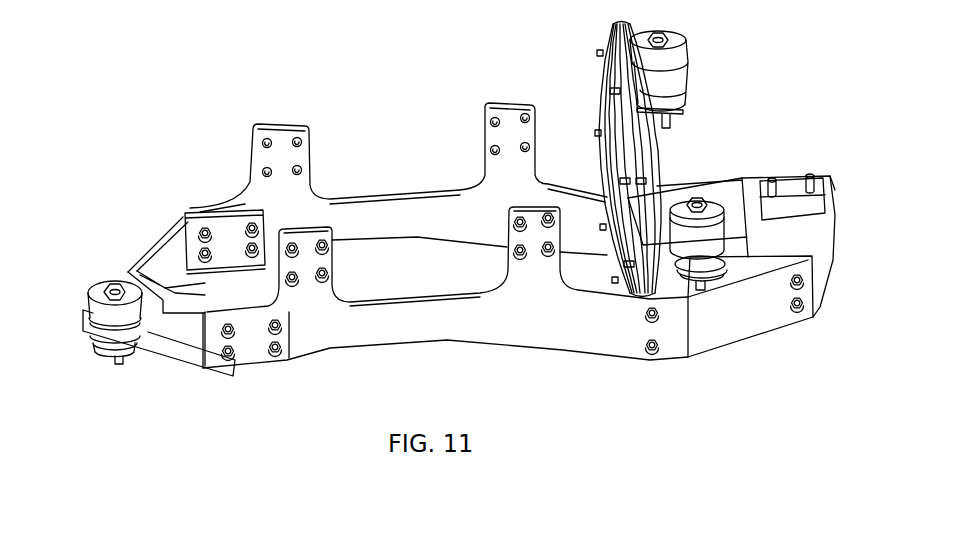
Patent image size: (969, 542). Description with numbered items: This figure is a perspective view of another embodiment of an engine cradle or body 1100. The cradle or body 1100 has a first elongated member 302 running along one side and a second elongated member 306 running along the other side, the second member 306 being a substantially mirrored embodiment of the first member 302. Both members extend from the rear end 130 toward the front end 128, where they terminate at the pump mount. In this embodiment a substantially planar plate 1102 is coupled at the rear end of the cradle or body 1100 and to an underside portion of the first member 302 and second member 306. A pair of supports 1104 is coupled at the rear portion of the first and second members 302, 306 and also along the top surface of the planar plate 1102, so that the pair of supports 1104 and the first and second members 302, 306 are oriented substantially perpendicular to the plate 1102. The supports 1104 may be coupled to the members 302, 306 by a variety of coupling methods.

The engine cradle or body 1100 is at (126, 152).
The rear end 130 is at (65, 215).
The front end 128 is at (824, 160).
The first elongated member 302 is at (473, 228).
The second elongated member 306 is at (535, 325).
The planar plate 1102 is at (252, 367).
The pair of supports 1104 is at (177, 337).